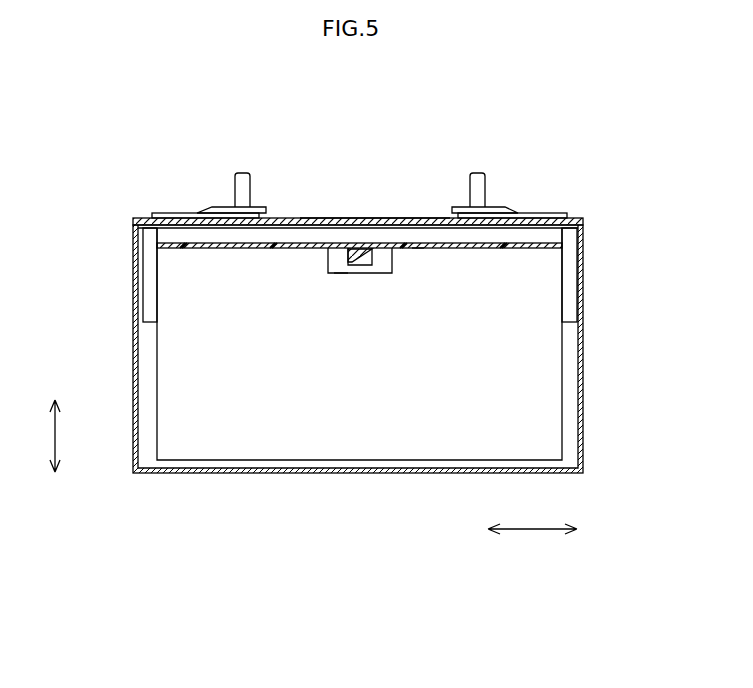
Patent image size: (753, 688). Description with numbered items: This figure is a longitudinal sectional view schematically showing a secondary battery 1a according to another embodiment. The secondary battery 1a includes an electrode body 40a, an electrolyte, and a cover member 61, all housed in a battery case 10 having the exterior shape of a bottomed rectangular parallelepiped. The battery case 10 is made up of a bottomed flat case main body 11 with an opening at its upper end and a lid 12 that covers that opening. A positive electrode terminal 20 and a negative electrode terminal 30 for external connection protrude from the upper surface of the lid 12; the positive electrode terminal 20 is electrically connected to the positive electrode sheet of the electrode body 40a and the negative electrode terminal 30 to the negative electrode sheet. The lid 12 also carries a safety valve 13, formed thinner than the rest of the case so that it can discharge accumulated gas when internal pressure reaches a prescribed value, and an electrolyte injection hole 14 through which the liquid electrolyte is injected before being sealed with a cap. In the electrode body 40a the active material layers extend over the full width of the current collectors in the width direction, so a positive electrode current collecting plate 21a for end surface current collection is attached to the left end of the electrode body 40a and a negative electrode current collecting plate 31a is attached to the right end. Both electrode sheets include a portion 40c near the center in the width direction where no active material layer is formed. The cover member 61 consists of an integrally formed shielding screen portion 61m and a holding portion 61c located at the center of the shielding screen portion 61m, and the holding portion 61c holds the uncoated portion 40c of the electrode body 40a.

The secondary battery 1a is at (614, 140).
The battery case 10 is at (647, 190).
The case main body 11 is at (591, 253).
The lid 12 is at (589, 222).
The safety valve 13 is at (371, 218).
The electrolyte injection hole 14 is at (313, 218).
The positive electrode terminal 20 is at (235, 186).
The negative electrode terminal 30 is at (470, 186).
The positive electrode current collecting plate 21a is at (142, 318).
The negative electrode current collecting plate 31a is at (577, 312).
The electrode body 40a is at (466, 437).
The portion in which an active material layer is not formed 40c is at (341, 273).
The cover member 61 is at (157, 246).
The holding portion 61c is at (345, 262).
The shielding screen portion 61m is at (418, 250).